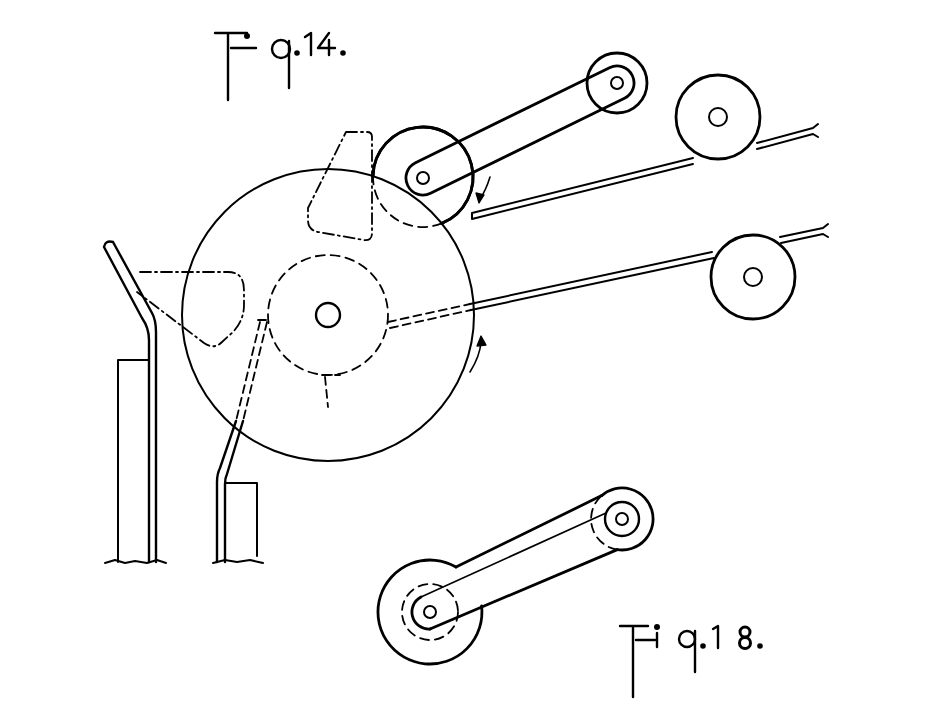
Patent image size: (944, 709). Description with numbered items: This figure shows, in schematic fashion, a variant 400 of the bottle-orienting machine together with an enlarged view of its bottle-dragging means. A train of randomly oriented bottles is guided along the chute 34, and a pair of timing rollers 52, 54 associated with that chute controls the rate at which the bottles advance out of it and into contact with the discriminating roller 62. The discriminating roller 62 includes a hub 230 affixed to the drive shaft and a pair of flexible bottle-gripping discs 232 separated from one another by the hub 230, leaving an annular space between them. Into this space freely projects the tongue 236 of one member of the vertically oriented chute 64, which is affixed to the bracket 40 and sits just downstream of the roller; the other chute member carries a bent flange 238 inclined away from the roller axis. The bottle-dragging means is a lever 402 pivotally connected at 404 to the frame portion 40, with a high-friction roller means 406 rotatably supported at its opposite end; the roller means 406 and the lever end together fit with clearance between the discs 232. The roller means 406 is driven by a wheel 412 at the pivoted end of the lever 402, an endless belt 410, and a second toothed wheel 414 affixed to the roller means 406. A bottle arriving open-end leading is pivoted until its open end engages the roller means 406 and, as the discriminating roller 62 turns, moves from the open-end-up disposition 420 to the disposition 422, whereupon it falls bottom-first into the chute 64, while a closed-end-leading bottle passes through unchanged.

In FIG. 14, the variant 400 is at (250, 171).
In FIG. 14, the lever 402 is at (525, 110).
In FIG. 18, the lever 402 is at (507, 555).
In FIG. 14, the pivotal connection 404 is at (623, 82).
In FIG. 18, the pivotal connection 404 is at (613, 507).
In FIG. 14, the roller means 406 is at (427, 133).
In FIG. 18, the roller means 406 is at (427, 662).
In FIG. 18, the endless belt 410 is at (571, 572).
In FIG. 14, the wheel 412 is at (618, 53).
In FIG. 18, the wheel 412 is at (648, 524).
In FIG. 18, the toothed wheel 414 is at (400, 637).
In FIG. 14, the open-end-up disposition 420 is at (342, 150).
In FIG. 14, the bottle disposition 422 is at (165, 282).
In FIG. 14, the bent flange 238 is at (113, 268).
In FIG. 14, the bottle gripping discs 232 is at (372, 453).
In FIG. 14, the hub 230 is at (329, 401).
In FIG. 14, the tongue 236 is at (247, 397).
In FIG. 14, the chute 64 is at (215, 522).
In FIG. 14, the discriminating roller 62 is at (417, 413).
In FIG. 14, the bracket 40 is at (575, 379).
In FIG. 14, the chute 34 is at (658, 258).
In FIG. 14, the timing roller 52 is at (728, 75).
In FIG. 14, the timing roller 54 is at (743, 302).